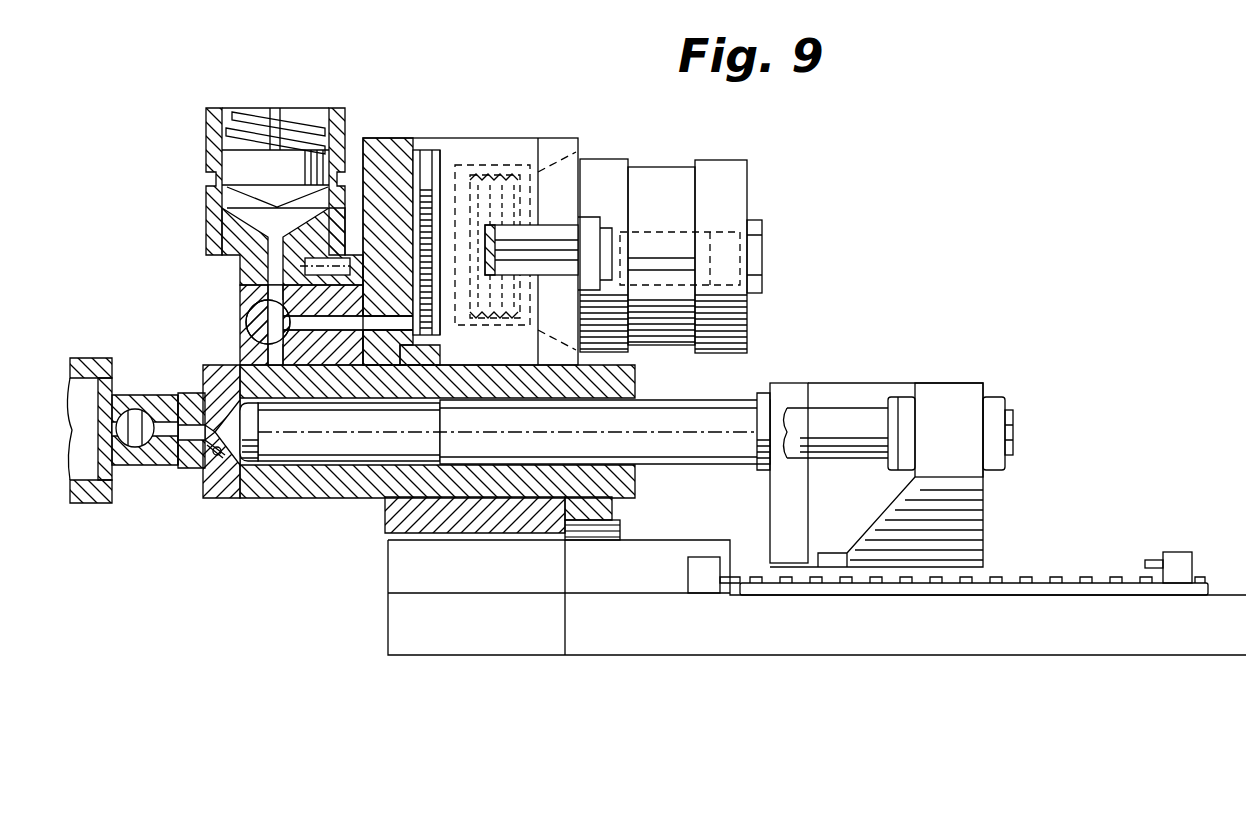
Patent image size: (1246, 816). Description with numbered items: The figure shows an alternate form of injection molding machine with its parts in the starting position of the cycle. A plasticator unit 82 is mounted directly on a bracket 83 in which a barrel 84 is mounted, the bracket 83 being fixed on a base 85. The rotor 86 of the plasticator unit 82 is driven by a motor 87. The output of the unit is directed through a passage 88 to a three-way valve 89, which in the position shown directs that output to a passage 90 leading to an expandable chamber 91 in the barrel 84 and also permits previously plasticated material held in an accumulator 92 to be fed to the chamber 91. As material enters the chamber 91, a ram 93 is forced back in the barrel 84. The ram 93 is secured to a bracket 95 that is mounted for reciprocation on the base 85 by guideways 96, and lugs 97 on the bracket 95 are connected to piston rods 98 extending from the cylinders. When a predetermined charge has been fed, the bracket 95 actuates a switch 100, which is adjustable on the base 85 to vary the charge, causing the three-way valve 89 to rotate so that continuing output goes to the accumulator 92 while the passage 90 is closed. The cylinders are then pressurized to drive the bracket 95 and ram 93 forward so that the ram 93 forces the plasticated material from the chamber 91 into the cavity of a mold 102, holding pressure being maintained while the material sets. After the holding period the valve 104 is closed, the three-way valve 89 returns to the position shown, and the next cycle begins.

The plasticator unit 82 is at (582, 132).
The bracket 83 is at (385, 525).
The barrel 84 is at (265, 505).
The base 85 is at (485, 645).
The rotor 86 is at (440, 170).
The motor 87 is at (748, 173).
The passage 88 is at (445, 322).
The three-way valve 89 is at (248, 335).
The passage 90 is at (222, 380).
The expandable chamber 91 is at (220, 462).
The accumulator 92 is at (206, 180).
The ram 93 is at (340, 460).
The bracket 95 is at (882, 382).
The guideways 96 is at (1045, 583).
The lugs 97 is at (960, 395).
The piston rods 98 is at (835, 420).
The switch 100 is at (1182, 552).
The mold 102 is at (93, 358).
The valve 104 is at (131, 410).